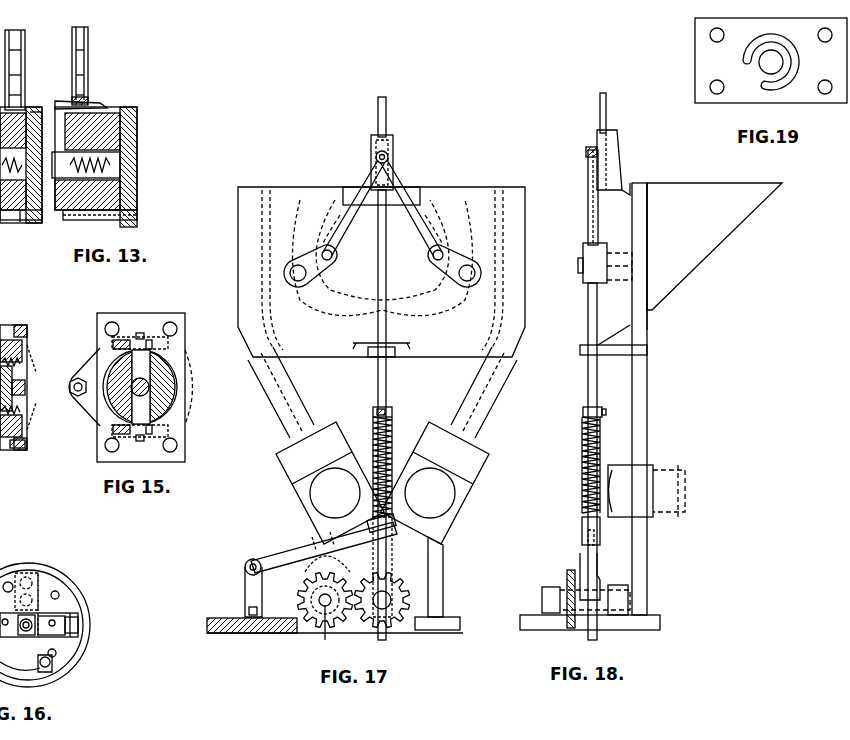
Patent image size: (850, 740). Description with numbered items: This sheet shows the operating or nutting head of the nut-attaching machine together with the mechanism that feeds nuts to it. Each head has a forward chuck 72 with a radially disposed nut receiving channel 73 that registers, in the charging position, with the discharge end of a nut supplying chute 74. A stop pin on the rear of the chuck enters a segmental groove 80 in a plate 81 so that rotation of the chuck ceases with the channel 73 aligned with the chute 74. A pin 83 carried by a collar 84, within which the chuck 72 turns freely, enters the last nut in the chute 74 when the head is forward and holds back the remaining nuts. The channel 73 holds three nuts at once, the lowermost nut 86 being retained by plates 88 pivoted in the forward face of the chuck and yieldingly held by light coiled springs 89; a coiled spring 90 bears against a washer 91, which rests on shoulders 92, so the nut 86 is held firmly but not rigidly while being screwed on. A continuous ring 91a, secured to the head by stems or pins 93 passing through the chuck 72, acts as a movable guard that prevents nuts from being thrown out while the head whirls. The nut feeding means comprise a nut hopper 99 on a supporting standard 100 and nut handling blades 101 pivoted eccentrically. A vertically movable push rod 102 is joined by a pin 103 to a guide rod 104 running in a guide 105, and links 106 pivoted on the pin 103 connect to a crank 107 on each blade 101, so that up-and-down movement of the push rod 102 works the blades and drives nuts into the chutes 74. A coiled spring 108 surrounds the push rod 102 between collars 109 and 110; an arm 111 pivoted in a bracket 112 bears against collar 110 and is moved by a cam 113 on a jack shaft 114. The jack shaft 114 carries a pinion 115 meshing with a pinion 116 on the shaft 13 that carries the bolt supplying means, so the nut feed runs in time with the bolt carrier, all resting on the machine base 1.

In FIG. 17, the base 1 is at (275, 634).
In FIG. 18, the base 1 is at (643, 630).
In FIG. 17, the shaft 13 is at (392, 600).
In FIG. 13, the chuck 72 is at (21, 137).
In FIG. 13, the nut receiving channel 73 is at (32, 110).
In FIG. 16, the nut receiving channel 73 is at (44, 572).
In FIG. 13, the nut supplying chute 74 is at (85, 78).
In FIG. 19, the segmental groove 80 is at (766, 40).
In FIG. 15, the plate 81 is at (185, 451).
In FIG. 19, the plate 81 is at (703, 52).
In FIG. 13, the pin 83 is at (96, 104).
In FIG. 15, the collar 84 is at (188, 392).
In FIG. 17, the collar 84 is at (364, 283).
In FIG. 13, the lowermost nut 86 is at (137, 172).
In FIG. 15, the plates 88 is at (30, 365).
In FIG. 16, the plates 88 is at (60, 630).
In FIG. 15, the coiled springs 89 is at (8, 330).
In FIG. 13, the coiled spring 90 is at (86, 176).
In FIG. 15, the coiled spring 90 is at (6, 450).
In FIG. 13, the washer 91 is at (20, 221).
In FIG. 15, the continuous ring 91a is at (27, 443).
In FIG. 13, the shoulders 92 is at (137, 216).
In FIG. 15, the shoulders 92 is at (27, 386).
In FIG. 16, the shoulders 92 is at (88, 622).
In FIG. 13, the stems or pins 93 is at (98, 218).
In FIG. 16, the stems or pins 93 is at (10, 582).
In FIG. 18, the nut hopper 99 is at (695, 259).
In FIG. 17, the supporting standard 100 is at (443, 546).
In FIG. 18, the supporting standard 100 is at (647, 346).
In FIG. 17, the nut handling blades 101 is at (318, 225).
In FIG. 17, the push rod 102 is at (296, 274).
In FIG. 18, the push rod 102 is at (576, 266).
In FIG. 17, the pin 103 is at (389, 155).
In FIG. 18, the pin 103 is at (586, 152).
In FIG. 17, the guide rod 104 is at (387, 112).
In FIG. 18, the guide rod 104 is at (606, 116).
In FIG. 17, the guide 105 is at (370, 145).
In FIG. 17, the links 106 is at (365, 185).
In FIG. 18, the links 106 is at (588, 178).
In FIG. 17, the crank 107 is at (325, 252).
In FIG. 18, the crank 107 is at (500, 230).
In FIG. 17, the coiled spring 108 is at (392, 432).
In FIG. 18, the coiled spring 108 is at (582, 457).
In FIG. 18, the collar 109 is at (584, 514).
In FIG. 18, the collar 110 is at (583, 412).
In FIG. 17, the arm 111 is at (290, 553).
In FIG. 17, the bracket 112 is at (246, 580).
In FIG. 17, the cam 113 is at (326, 560).
In FIG. 18, the cam 113 is at (585, 560).
In FIG. 17, the jack shaft 114 is at (322, 606).
In FIG. 18, the jack shaft 114 is at (542, 600).
In FIG. 17, the pinion 115 is at (334, 620).
In FIG. 18, the pinion 115 is at (567, 622).
In FIG. 17, the pinion 116 is at (392, 620).